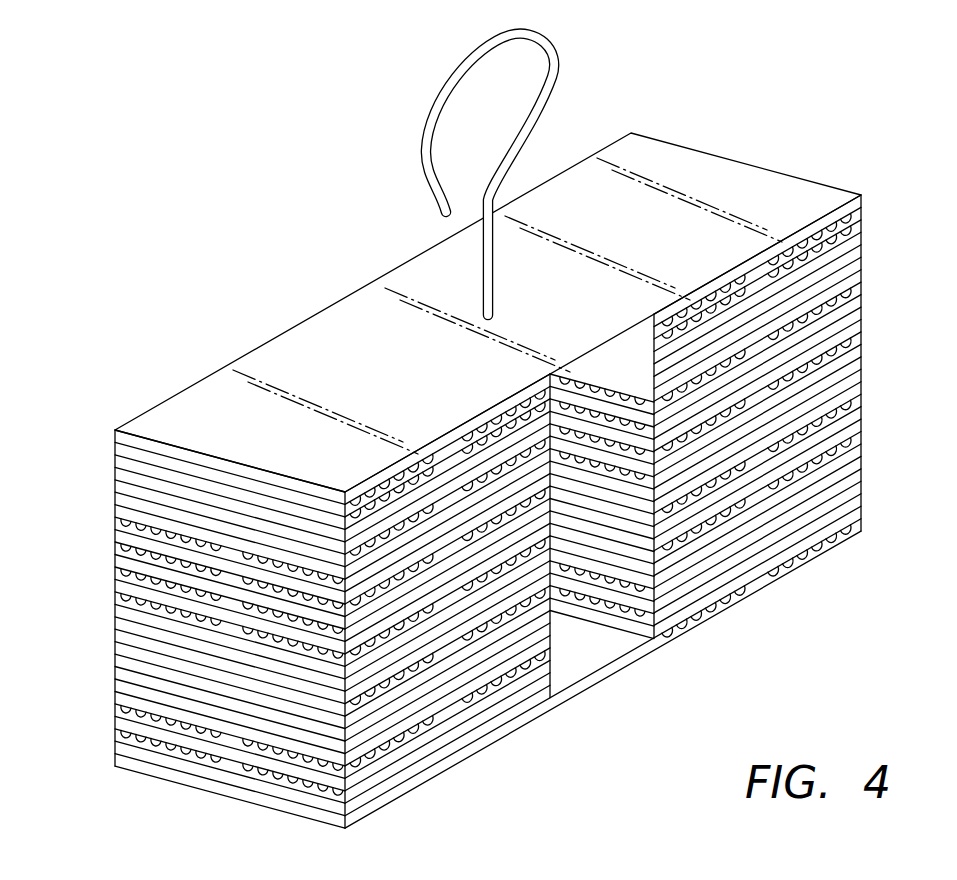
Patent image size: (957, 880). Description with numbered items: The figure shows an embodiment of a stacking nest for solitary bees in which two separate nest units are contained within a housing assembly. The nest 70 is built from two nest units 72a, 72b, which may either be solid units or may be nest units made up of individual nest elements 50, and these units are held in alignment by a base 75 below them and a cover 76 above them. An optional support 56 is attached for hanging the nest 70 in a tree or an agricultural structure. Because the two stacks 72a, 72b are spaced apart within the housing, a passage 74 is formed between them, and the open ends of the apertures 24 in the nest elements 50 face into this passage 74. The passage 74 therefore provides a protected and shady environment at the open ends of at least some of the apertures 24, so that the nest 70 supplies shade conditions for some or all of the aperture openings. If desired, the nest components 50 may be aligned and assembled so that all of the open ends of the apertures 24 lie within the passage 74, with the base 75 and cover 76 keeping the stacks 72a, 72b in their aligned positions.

The nest 70 is at (486, 447).
The support 56 is at (557, 75).
The cover 76 is at (688, 188).
The aperture 24 is at (600, 388).
The nest element 50 is at (486, 496).
The nest unit 72a is at (497, 732).
The nest unit 72b is at (761, 578).
The passage 74 is at (573, 638).
The base 75 is at (706, 620).